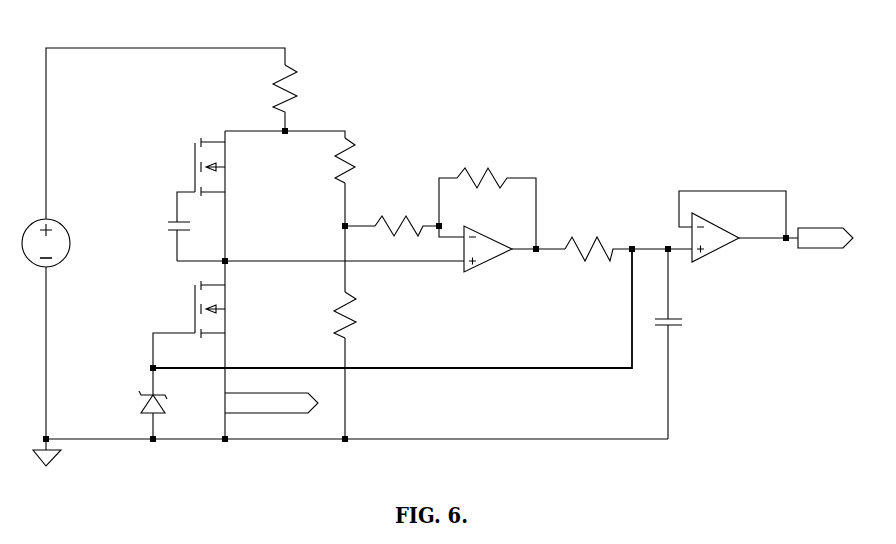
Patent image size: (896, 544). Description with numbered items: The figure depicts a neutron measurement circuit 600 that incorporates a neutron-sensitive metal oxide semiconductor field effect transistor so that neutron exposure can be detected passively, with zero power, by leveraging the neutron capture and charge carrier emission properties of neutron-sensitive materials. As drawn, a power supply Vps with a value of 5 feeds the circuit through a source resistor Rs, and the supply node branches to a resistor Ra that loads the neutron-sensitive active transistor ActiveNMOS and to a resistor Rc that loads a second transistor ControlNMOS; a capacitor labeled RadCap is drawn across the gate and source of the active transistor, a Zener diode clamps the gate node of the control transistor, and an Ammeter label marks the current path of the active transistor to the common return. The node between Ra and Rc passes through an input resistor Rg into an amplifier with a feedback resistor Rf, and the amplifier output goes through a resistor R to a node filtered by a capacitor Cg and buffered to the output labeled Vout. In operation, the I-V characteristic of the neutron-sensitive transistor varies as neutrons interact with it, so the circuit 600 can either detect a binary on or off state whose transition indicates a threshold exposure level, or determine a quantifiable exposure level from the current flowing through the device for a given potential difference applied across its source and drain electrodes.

The neutron measurement circuit 600 is at (433, 257).
The power supply voltage value 5 is at (34, 268).
The power supply Vps is at (41, 245).
The source resistor Rs is at (297, 98).
The active NMOS drain resistor Ra is at (363, 162).
The control NMOS drain resistor Rc is at (363, 316).
The op amp input resistor Rg is at (392, 228).
The feedback resistor Rf is at (487, 199).
The output resistor R is at (628, 250).
The output capacitor Cg is at (686, 344).
The radiation sensing capacitor RadCap is at (146, 226).
The zener diode Zener is at (128, 415).
The ammeter Ammeter is at (271, 403).
The output voltage Vout is at (825, 238).
The active NMOS transistor ActiveNMOS is at (240, 167).
The control NMOS transistor ControlNMOS is at (223, 338).